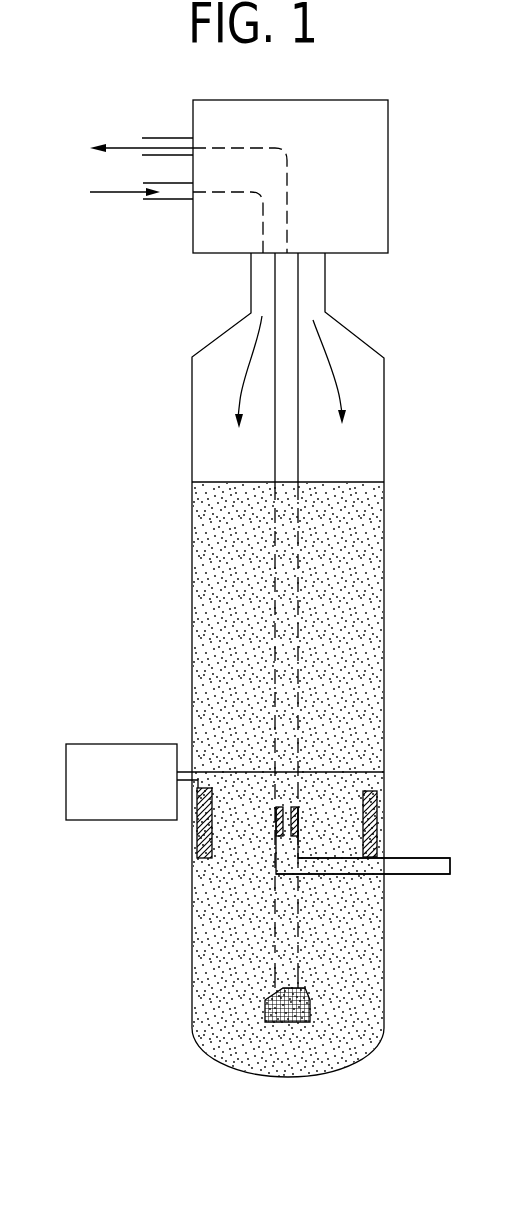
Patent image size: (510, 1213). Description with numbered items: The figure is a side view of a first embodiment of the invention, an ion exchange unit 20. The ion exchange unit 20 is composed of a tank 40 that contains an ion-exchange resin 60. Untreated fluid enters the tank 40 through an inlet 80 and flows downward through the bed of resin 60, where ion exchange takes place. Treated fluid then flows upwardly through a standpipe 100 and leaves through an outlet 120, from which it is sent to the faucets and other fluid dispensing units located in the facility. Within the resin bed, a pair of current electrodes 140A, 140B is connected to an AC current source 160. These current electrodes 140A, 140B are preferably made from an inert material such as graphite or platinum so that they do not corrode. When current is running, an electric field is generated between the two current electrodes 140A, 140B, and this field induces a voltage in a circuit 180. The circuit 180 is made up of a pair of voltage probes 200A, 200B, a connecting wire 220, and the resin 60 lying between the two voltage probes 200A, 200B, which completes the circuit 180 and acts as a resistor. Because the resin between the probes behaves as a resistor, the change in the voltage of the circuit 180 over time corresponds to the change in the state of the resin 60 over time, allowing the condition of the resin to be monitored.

The ion exchange unit 20 is at (403, 414).
The tank 40 is at (383, 526).
The ion-exchange resin 60 is at (352, 649).
The inlet 80 is at (117, 205).
The standpipe 100 is at (288, 334).
The outlet 120 is at (118, 128).
The current electrode 140A is at (217, 790).
The current electrode 140B is at (377, 808).
The AC current source 160 is at (90, 744).
The circuit 180 is at (280, 837).
The voltage probe 200A is at (277, 827).
The voltage probe 200B is at (300, 827).
The connecting wire 220 is at (430, 858).